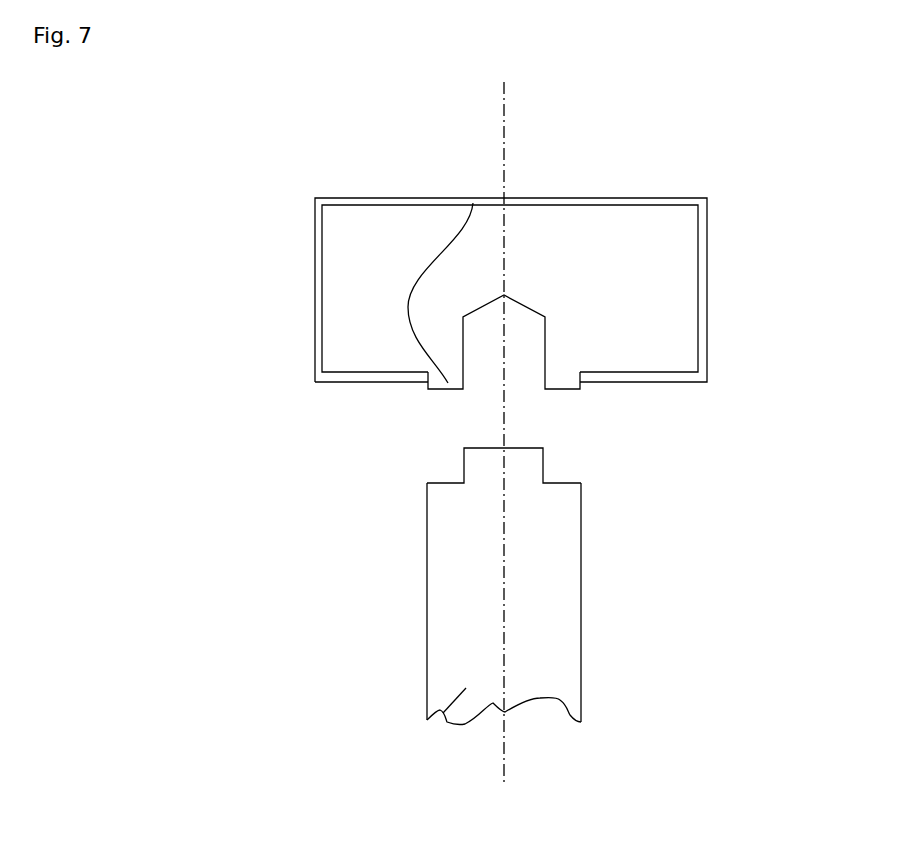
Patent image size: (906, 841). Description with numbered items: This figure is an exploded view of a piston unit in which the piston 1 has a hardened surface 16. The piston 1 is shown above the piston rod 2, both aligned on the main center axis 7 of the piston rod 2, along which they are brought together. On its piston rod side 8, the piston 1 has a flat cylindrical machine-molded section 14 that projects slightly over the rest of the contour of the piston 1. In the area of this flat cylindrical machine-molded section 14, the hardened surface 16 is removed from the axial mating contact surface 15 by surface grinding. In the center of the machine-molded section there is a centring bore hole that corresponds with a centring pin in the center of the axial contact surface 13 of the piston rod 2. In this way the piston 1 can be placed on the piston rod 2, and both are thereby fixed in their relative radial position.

The piston 1 is at (355, 265).
The piston rod 2 is at (427, 720).
The main center axis 7 is at (504, 150).
The piston rod side 8 is at (466, 298).
The axial contact surface 13 is at (445, 482).
The flat cylindrical machine-molded section 14 is at (473, 203).
The axial mating contact surface 15 is at (558, 391).
The hardened surface 16 is at (318, 202).